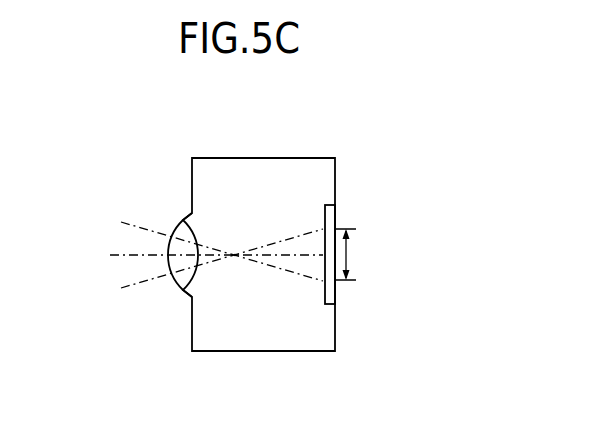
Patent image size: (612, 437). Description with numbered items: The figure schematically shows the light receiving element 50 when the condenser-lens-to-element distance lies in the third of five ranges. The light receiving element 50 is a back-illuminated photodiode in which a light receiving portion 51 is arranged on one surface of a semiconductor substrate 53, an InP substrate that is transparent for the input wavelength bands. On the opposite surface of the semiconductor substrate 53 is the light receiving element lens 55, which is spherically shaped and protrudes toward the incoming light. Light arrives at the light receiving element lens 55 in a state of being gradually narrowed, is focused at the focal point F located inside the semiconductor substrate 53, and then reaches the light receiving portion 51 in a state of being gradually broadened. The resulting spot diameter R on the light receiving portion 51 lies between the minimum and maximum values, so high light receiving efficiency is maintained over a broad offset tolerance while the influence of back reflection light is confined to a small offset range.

The light receiving element 50 is at (152, 182).
The light receiving portion 51 is at (331, 213).
The semiconductor substrate 53 is at (241, 158).
The light receiving element lens 55 is at (177, 285).
The focal point F is at (236, 255).
The spot diameter R is at (352, 254).